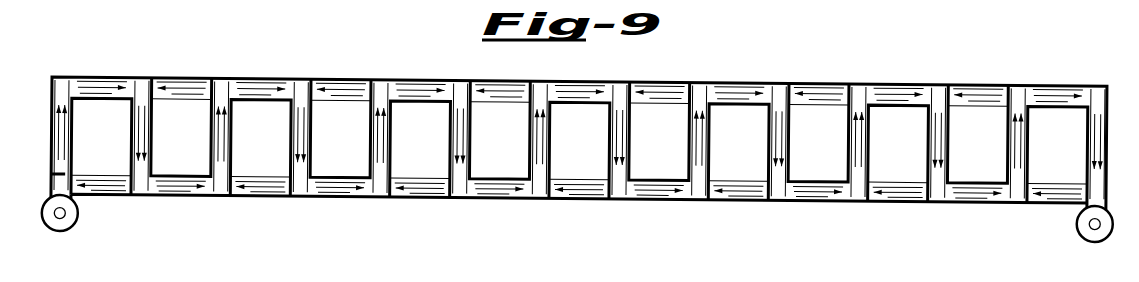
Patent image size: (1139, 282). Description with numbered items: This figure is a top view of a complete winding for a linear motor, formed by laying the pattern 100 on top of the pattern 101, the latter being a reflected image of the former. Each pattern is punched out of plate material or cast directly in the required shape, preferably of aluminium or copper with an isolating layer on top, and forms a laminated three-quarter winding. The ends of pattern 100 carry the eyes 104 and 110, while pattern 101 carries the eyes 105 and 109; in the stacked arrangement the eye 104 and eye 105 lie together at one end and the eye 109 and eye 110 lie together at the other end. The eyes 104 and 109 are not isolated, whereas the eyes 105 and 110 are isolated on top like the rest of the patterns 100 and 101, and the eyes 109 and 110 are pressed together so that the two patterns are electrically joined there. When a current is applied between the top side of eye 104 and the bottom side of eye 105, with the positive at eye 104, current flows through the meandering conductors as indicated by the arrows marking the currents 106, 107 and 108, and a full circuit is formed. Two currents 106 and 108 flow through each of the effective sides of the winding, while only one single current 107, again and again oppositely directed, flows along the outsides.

The pattern 100 is at (578, 147).
The pattern 101 is at (337, 83).
The eye 104 is at (96, 221).
The eye 105 is at (75, 222).
The current 106 is at (532, 142).
The current 107 is at (812, 93).
The current 108 is at (693, 142).
The eye 109 is at (1084, 229).
The eye 110 is at (1060, 227).